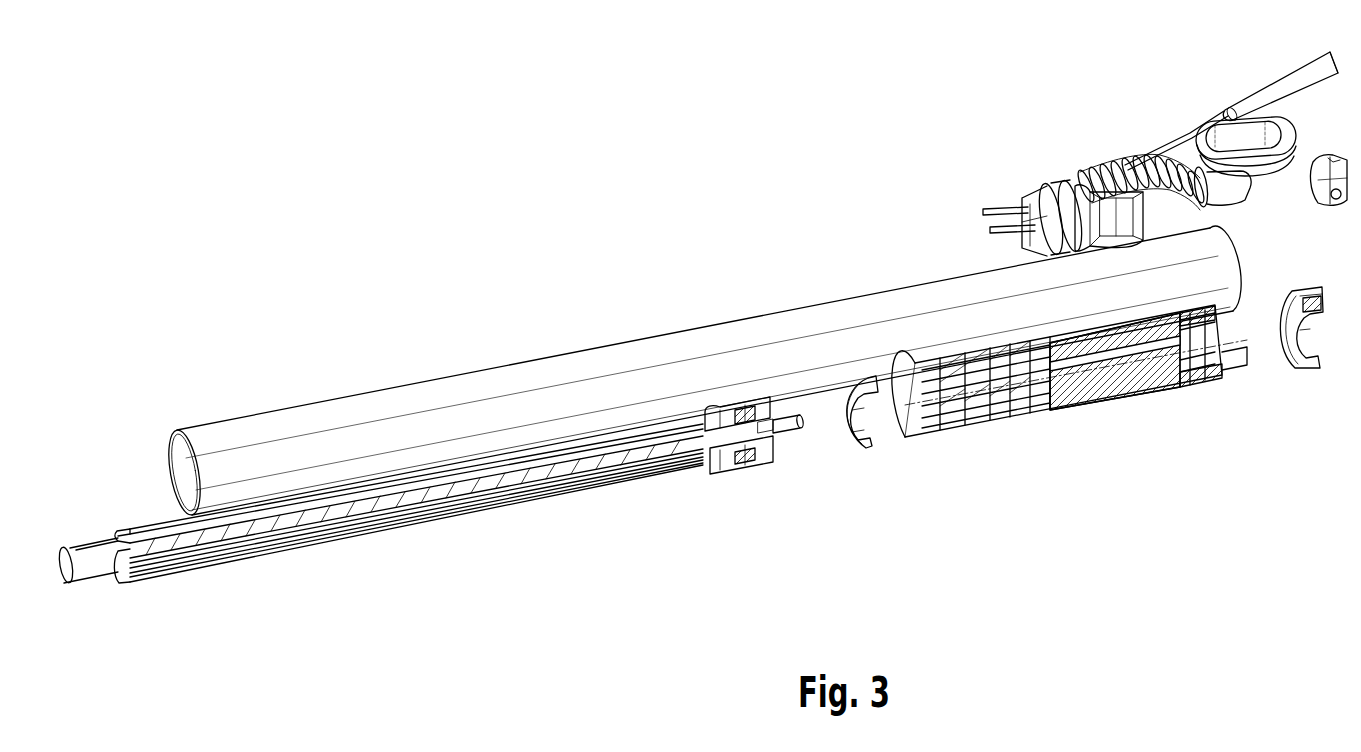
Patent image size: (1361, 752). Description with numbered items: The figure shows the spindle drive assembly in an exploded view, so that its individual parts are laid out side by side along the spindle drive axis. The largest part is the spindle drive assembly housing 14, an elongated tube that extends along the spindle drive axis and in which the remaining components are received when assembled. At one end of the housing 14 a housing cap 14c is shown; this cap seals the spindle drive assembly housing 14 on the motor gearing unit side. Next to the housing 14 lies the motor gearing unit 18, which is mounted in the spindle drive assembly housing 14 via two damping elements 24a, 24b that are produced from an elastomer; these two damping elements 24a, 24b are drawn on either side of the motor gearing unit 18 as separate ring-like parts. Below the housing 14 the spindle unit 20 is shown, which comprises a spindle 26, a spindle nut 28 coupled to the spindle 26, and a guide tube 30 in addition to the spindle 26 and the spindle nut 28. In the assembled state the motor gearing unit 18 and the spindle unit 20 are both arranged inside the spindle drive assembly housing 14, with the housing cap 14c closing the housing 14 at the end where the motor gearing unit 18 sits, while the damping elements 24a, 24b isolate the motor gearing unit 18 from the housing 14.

The spindle drive assembly housing 14 is at (603, 367).
The housing cap 14c is at (1052, 183).
The motor gearing unit 18 is at (1112, 405).
The spindle unit 20 is at (430, 513).
The damping element 24a is at (866, 448).
The damping element 24b is at (1311, 368).
The spindle 26 is at (342, 522).
The spindle nut 28 is at (714, 468).
The guide tube 30 is at (633, 482).